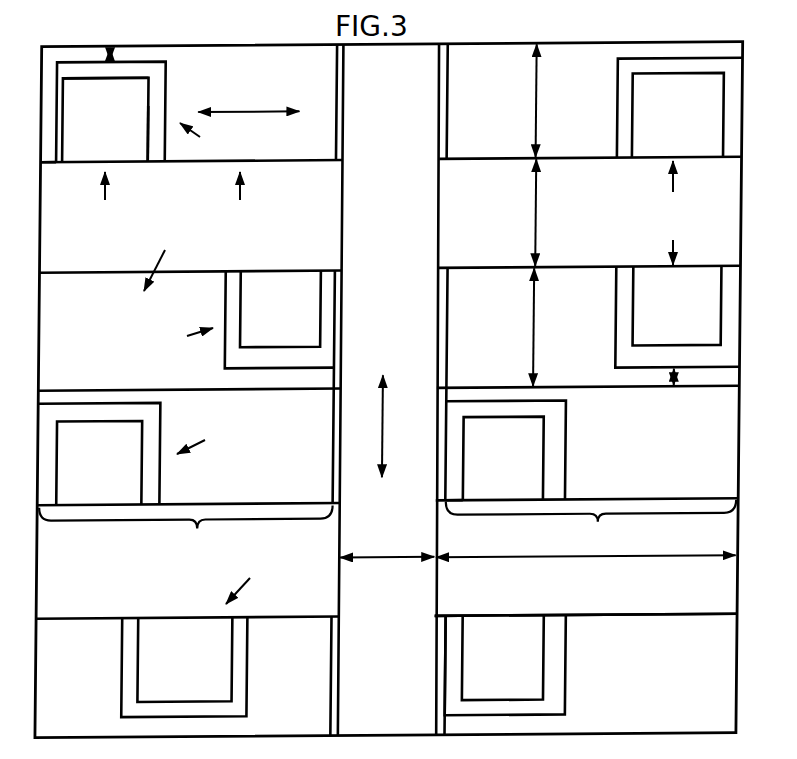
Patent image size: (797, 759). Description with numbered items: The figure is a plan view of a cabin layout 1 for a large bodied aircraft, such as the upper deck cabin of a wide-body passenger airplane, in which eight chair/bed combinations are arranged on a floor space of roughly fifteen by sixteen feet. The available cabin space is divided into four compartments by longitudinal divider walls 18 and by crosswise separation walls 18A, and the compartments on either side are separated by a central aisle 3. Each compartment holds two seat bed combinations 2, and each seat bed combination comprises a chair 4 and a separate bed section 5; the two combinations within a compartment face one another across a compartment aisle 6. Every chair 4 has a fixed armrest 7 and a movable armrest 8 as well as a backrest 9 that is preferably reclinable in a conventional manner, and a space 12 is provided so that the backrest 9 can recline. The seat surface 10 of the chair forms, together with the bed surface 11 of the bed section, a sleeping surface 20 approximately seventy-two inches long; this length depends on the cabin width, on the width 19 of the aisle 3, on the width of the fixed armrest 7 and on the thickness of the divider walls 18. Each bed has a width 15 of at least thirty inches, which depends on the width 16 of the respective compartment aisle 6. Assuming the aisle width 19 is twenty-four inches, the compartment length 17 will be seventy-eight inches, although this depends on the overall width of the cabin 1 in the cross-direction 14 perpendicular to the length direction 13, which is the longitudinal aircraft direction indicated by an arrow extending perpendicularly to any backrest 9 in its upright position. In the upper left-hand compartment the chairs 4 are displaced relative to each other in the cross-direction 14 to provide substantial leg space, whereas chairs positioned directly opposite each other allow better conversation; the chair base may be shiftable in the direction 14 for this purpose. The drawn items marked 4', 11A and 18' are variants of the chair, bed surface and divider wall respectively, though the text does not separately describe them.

The cabin layout 1 is at (565, 35).
The seat bed combination 2 is at (387, 531).
The aisle 3 is at (393, 175).
The chair 4 is at (385, 288).
The air flow 4' is at (251, 581).
The bed section 5 is at (268, 475).
The compartment aisle 6 is at (300, 235).
The fixed armrest 7 is at (48, 160).
The movable armrest 8 is at (157, 153).
The backrest 9 is at (137, 68).
The seat surface 10 is at (122, 131).
The bed surface 11 is at (266, 95).
The room 11A is at (316, 676).
The space 12 is at (110, 52).
The length direction 13 is at (383, 432).
The cross-direction 14 is at (250, 113).
The bed width 15 is at (535, 118).
The aisle width 16 is at (535, 222).
The compartment length 17 is at (518, 560).
The longitudinal divider wall 18 is at (390, 390).
The floor slab 18' is at (189, 407).
The crosswise separation wall 18A is at (596, 388).
The aisle width 19 is at (403, 561).
The sleeping surface 20 is at (585, 545).